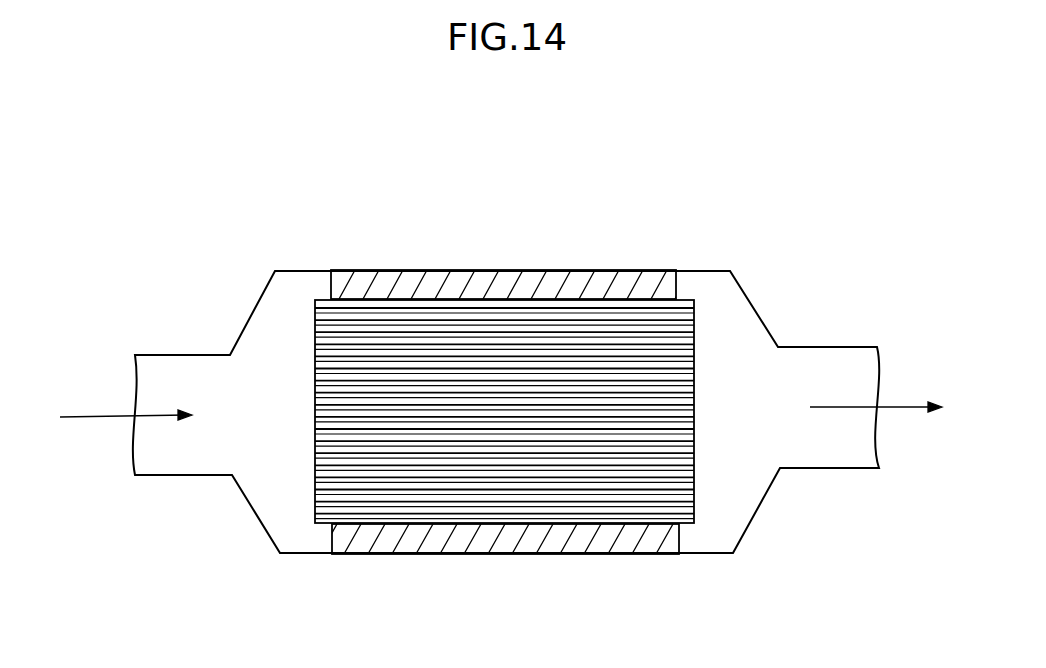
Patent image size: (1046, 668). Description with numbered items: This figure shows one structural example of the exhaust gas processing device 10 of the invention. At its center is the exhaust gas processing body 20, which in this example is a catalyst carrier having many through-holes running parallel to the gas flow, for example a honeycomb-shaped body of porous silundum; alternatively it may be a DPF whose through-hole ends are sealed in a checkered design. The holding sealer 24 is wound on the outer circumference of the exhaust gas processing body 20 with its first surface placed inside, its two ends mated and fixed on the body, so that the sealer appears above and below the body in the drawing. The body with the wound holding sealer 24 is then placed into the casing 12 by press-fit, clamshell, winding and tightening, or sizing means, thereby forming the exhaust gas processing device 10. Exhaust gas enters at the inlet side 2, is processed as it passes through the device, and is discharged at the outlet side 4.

The exhaust gas processing device 10 is at (501, 359).
The exhaust gas inlet pipe 2 is at (187, 366).
The exhaust gas outlet pipe 4 is at (852, 372).
The casing 12 is at (305, 557).
The exhaust gas processing body 20 is at (697, 332).
The holding sealer 24 is at (475, 273).